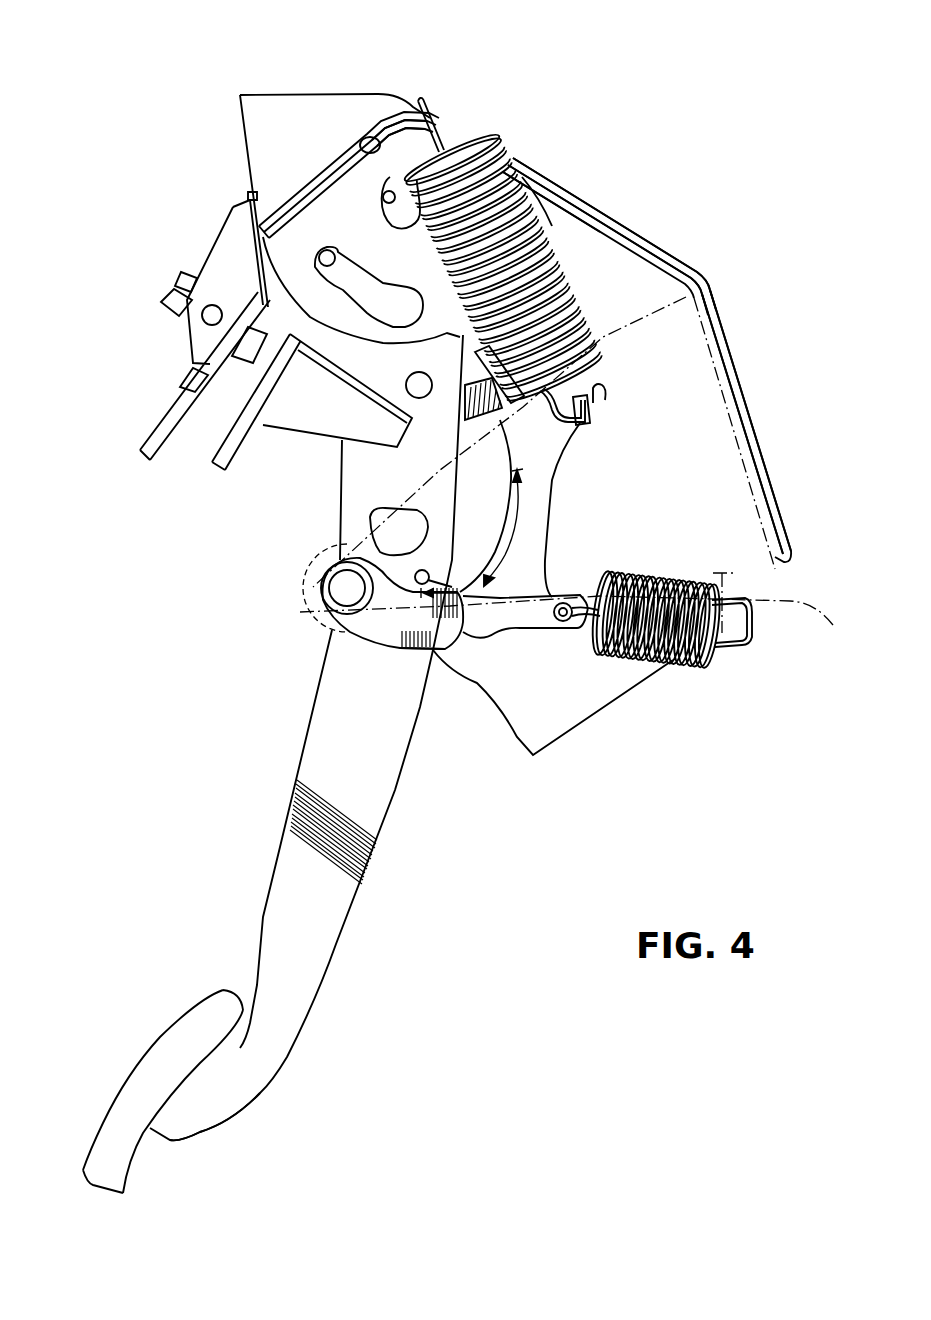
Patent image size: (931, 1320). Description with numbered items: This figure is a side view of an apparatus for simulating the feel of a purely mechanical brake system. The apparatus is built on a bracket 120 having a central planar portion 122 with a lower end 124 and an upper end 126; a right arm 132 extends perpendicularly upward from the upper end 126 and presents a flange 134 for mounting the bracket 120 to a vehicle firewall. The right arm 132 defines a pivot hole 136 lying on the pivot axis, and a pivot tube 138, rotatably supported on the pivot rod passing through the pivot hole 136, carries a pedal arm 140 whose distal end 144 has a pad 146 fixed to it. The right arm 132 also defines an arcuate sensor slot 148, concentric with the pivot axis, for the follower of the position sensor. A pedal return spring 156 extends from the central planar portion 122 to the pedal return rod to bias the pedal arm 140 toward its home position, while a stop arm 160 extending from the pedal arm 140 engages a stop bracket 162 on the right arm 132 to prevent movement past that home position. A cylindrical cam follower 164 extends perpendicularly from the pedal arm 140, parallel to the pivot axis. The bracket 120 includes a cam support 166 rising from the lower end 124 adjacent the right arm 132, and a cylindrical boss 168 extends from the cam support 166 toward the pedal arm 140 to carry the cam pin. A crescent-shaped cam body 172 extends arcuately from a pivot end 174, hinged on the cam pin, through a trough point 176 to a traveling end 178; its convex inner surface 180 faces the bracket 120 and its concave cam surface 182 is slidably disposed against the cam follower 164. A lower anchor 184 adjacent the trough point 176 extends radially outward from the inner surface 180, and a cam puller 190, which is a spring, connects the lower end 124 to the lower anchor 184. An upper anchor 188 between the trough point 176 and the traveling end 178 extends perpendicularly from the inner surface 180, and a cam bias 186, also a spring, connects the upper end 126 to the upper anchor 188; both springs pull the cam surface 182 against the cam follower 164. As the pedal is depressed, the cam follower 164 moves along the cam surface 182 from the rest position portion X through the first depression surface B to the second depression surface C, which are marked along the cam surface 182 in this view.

The bracket 120 is at (648, 235).
The central planar portion 122 is at (690, 269).
The lower end 124 is at (770, 466).
The upper end 126 is at (533, 160).
The right arm 132 is at (377, 133).
The flange 134 is at (263, 92).
The pivot hole 136 is at (377, 203).
The pivot tube 138 is at (390, 177).
The pedal arm 140 is at (300, 747).
The distal end 144 is at (263, 1093).
The pad 146 is at (110, 1103).
The sensor slot 148 is at (347, 303).
The pedal return spring 156 is at (463, 423).
The stop arm 160 is at (248, 450).
The stop bracket 162 is at (147, 428).
The cam follower 164 is at (457, 655).
The cam support 166 is at (580, 472).
The boss 168 is at (322, 603).
The cam body 172 is at (384, 655).
The pivot end 174 is at (323, 573).
The trough point 176 is at (500, 547).
The traveling end 178 is at (483, 357).
The inner surface 180 is at (553, 503).
The cam surface 182 is at (510, 502).
The lower anchor 184 is at (553, 632).
The cam bias 186 is at (552, 226).
The upper anchor 188 is at (597, 400).
The cam puller 190 is at (690, 658).